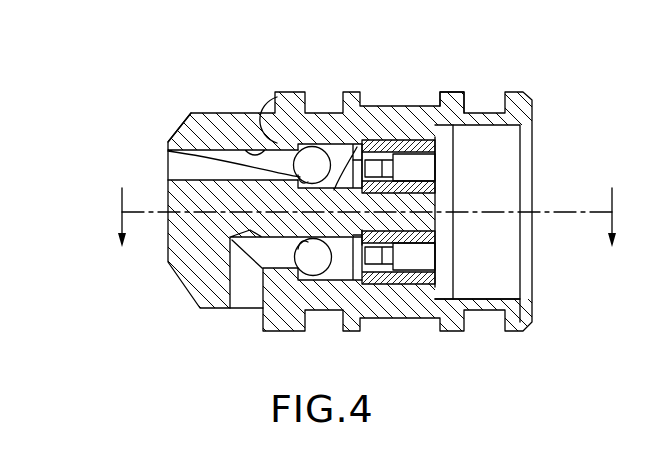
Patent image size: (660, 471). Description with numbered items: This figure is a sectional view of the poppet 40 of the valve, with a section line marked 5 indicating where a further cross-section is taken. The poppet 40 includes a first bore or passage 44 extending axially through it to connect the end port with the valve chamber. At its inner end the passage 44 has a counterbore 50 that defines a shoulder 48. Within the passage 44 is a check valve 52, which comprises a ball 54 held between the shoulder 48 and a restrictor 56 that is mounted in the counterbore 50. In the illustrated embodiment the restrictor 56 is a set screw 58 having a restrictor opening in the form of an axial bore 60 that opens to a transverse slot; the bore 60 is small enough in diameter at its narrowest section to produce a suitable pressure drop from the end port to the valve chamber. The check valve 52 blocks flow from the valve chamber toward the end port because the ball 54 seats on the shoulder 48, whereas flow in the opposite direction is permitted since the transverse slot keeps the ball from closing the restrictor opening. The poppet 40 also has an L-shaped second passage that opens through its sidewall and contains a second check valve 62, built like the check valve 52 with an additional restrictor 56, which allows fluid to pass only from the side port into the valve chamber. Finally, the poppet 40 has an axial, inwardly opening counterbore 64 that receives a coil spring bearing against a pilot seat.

The poppet 40 is at (522, 84).
The first bore or passage 44 is at (272, 95).
The shoulder 48 is at (171, 141).
The counterbore 50 is at (445, 118).
The check valve 52 is at (318, 167).
The ball 54 is at (356, 148).
The restrictor 56 is at (372, 140).
The set screw 58 is at (453, 142).
The axial bore 60 is at (425, 173).
The check valve 62 is at (311, 256).
The counterbore 64 is at (487, 298).
The section line 5- 5 is at (366, 203).